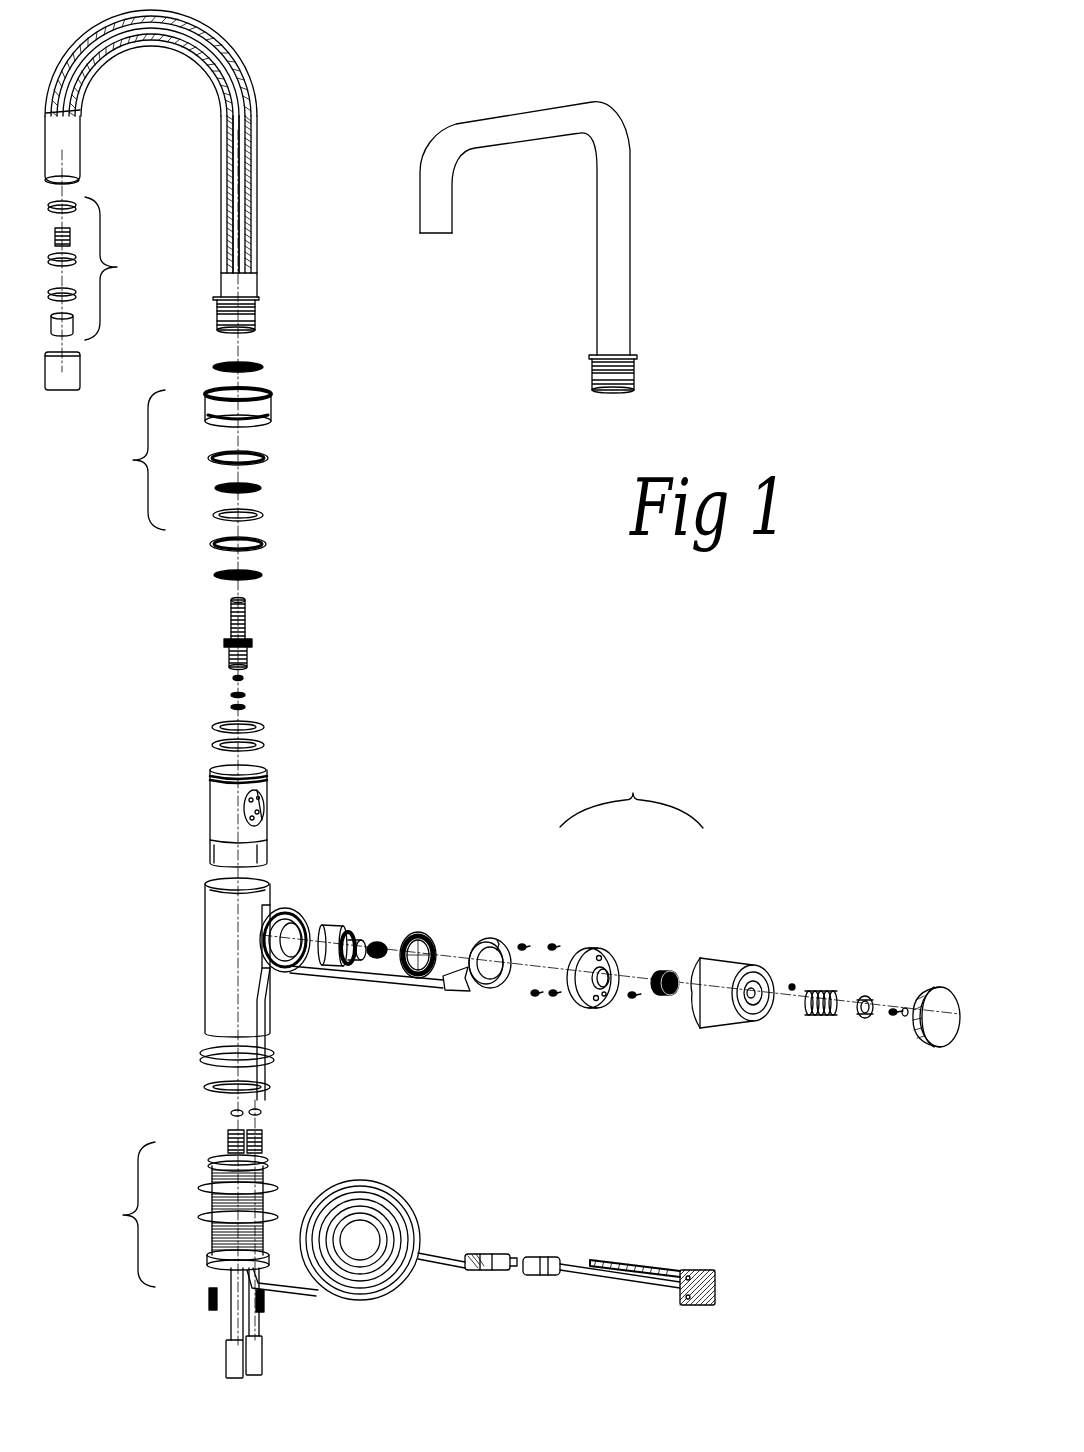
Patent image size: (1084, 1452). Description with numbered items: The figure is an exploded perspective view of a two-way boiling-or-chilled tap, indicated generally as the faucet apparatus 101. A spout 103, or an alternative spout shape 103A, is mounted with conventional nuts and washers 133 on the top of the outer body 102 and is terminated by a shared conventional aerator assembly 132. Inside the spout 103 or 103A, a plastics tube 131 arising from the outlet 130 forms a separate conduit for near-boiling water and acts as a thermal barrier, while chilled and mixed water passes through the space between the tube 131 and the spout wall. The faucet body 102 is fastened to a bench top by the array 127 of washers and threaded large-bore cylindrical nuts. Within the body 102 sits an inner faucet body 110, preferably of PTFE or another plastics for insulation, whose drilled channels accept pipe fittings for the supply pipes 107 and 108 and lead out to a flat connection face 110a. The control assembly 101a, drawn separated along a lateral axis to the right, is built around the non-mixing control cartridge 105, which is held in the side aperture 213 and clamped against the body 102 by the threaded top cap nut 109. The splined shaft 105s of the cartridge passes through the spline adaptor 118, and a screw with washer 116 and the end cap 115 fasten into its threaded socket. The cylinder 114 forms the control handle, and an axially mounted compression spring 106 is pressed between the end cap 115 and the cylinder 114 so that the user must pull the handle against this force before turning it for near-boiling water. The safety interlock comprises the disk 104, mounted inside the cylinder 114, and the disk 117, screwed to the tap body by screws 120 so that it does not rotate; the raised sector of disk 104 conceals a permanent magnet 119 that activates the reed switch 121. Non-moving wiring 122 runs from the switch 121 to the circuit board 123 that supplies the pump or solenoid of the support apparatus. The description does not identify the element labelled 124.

The faucet apparatus 101 is at (716, 310).
The control assembly 101a is at (631, 790).
The outer body 102 is at (192, 953).
The spout 103 is at (230, 43).
The alternative spout 103A is at (600, 107).
The disk 104 is at (588, 933).
The non-mixing control cartridge 105 is at (328, 912).
The splined shaft 105s is at (384, 940).
The compression spring 106 is at (818, 1017).
The supply pipe 107 is at (223, 1363).
The supply pipe 108 is at (262, 1337).
The threaded top cap nut 109 is at (407, 925).
The inner faucet body 110 is at (207, 806).
The flat connection face 110a is at (267, 796).
The cylinder 114 is at (715, 952).
The control handle cap 115 is at (922, 983).
The washer 116 is at (860, 993).
The disk 117 is at (480, 922).
The spline adaptor 118 is at (673, 995).
The permanent magnet 119 is at (636, 1001).
The screws 120 is at (547, 997).
The electric switch 121 is at (460, 996).
The wiring 122 is at (368, 980).
The circuit board 123 is at (700, 1267).
The cable 124 is at (612, 1257).
The array of washers and threaded nuts 127 is at (166, 1224).
The outlet 130 is at (248, 619).
The plastics tube 131 is at (247, 127).
The aerator assembly 132 is at (105, 293).
The nuts and washers 133 is at (168, 471).
The side aperture 213 is at (273, 902).